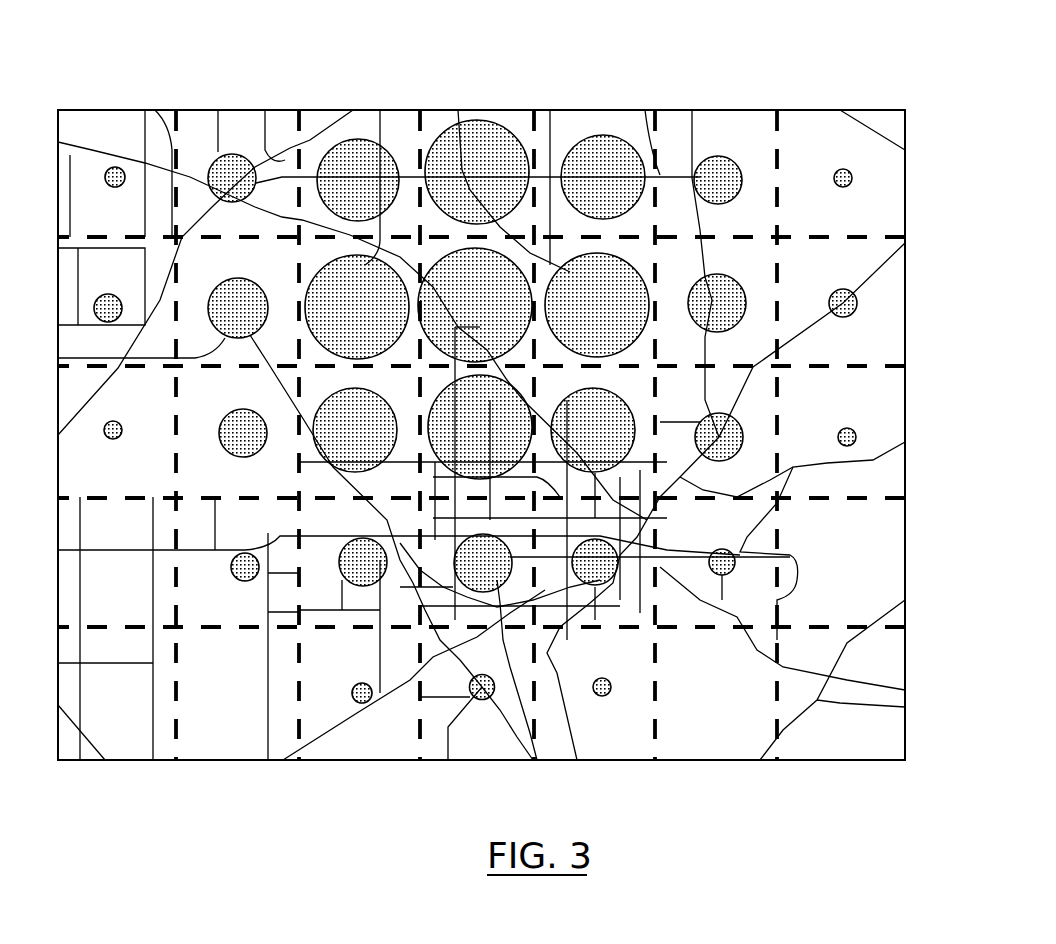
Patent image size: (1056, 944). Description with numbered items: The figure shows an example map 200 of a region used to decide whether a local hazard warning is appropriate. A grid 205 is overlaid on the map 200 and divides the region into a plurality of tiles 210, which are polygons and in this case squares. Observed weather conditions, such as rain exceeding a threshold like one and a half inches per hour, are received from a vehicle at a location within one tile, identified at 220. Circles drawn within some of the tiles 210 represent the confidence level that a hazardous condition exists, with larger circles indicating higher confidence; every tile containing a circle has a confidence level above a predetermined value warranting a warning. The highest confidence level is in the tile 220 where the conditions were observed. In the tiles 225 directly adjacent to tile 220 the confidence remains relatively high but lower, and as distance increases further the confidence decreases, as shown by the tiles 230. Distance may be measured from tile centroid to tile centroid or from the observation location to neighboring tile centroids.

The map 200 is at (862, 105).
The grid 205 is at (863, 236).
The tiles 210 is at (322, 133).
The tile with observed conditions 220 is at (475, 305).
The adjacent tiles 225 is at (477, 299).
The distant tiles 230 is at (477, 433).